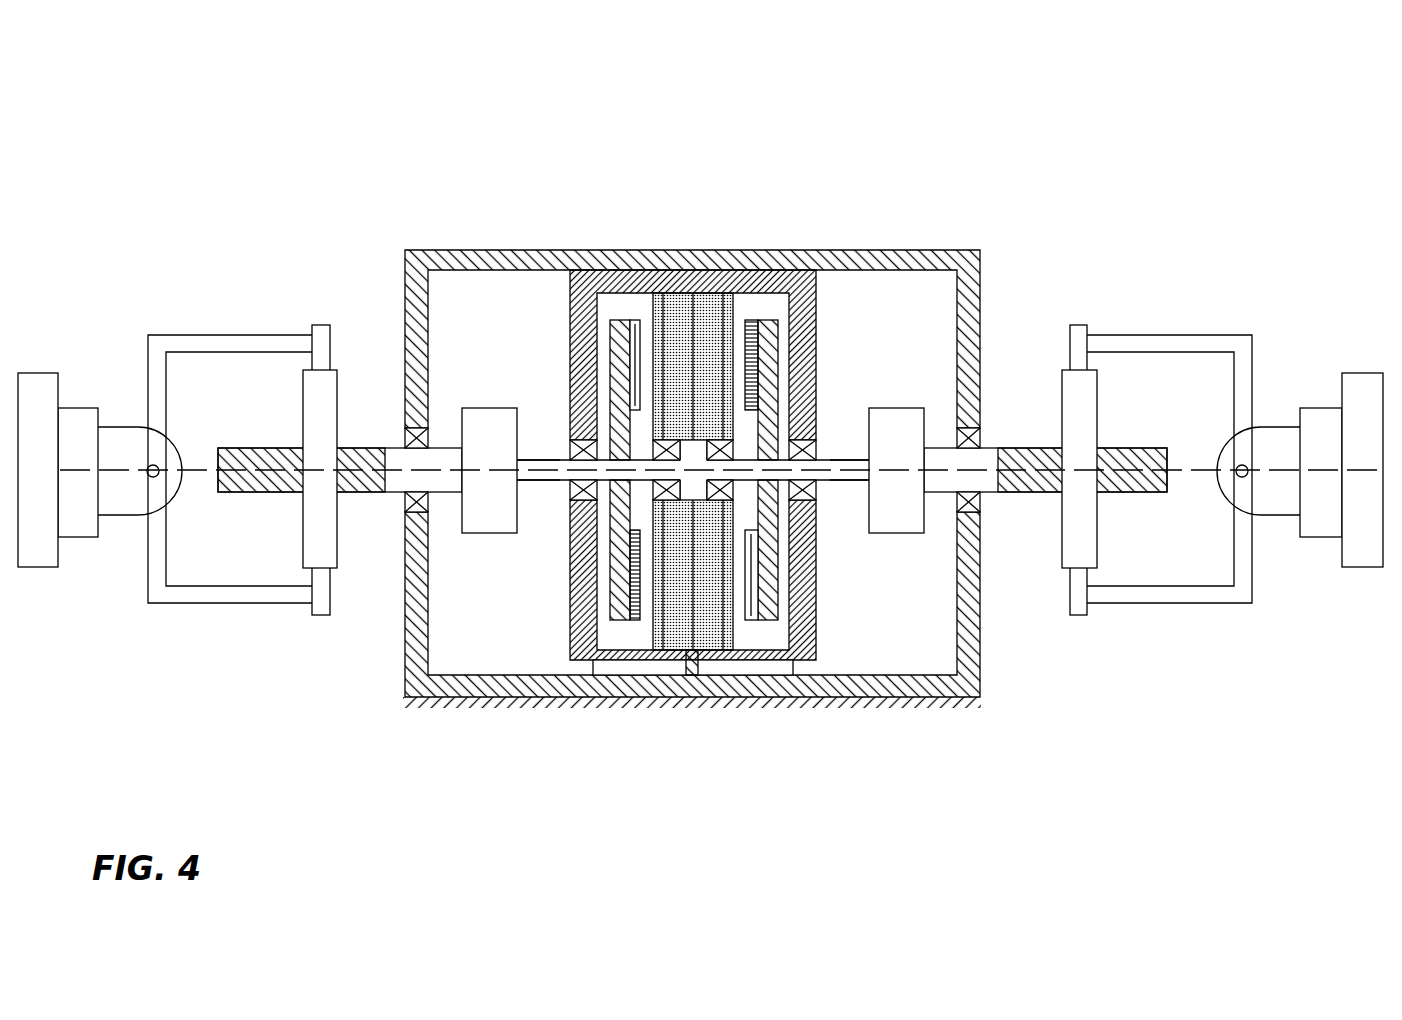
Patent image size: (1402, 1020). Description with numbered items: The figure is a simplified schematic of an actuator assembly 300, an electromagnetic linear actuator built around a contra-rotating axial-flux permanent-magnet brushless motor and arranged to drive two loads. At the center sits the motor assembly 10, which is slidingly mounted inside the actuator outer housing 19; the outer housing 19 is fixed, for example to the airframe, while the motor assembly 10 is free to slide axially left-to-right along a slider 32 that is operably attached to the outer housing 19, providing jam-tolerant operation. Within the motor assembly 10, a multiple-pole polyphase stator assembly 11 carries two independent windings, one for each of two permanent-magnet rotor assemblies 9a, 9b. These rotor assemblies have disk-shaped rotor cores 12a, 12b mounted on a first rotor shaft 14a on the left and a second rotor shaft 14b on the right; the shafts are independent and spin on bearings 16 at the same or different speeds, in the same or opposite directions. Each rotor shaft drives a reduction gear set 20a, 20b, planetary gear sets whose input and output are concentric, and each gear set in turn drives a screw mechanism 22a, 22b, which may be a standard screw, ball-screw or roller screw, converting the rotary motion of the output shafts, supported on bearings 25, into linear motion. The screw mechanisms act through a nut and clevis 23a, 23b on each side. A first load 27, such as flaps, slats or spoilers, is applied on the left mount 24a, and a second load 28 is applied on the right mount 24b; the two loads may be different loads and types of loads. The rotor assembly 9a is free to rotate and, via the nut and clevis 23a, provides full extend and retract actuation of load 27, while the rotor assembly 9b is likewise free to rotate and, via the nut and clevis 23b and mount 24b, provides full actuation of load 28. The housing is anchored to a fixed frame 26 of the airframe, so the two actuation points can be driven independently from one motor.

The actuator assembly 300 is at (992, 108).
The rotor assembly 9a is at (553, 497).
The rotor assembly 9b is at (832, 495).
The motor assembly 10 is at (798, 662).
The stator assembly 11 is at (682, 332).
The rotor core 12a is at (617, 322).
The rotor core 12b is at (765, 322).
The first rotor shaft 14a is at (530, 455).
The second rotor shaft 14b is at (860, 455).
The bearings 16 is at (571, 503).
The actuator outer housing 19 is at (903, 255).
The reduction gear set 20a is at (493, 497).
The reduction gear set 20b is at (897, 503).
The screw mechanism 22a is at (372, 490).
The screw mechanism 22b is at (1027, 493).
The nut and clevis 23a is at (258, 345).
The nut and clevis 23b is at (1167, 345).
The left mount 24a is at (75, 408).
The right mount 24b is at (1323, 408).
The bearings 25 is at (415, 512).
The fixed frame 26 is at (637, 700).
The load 27 is at (40, 568).
The load 28 is at (1365, 568).
The slider 32 is at (760, 672).